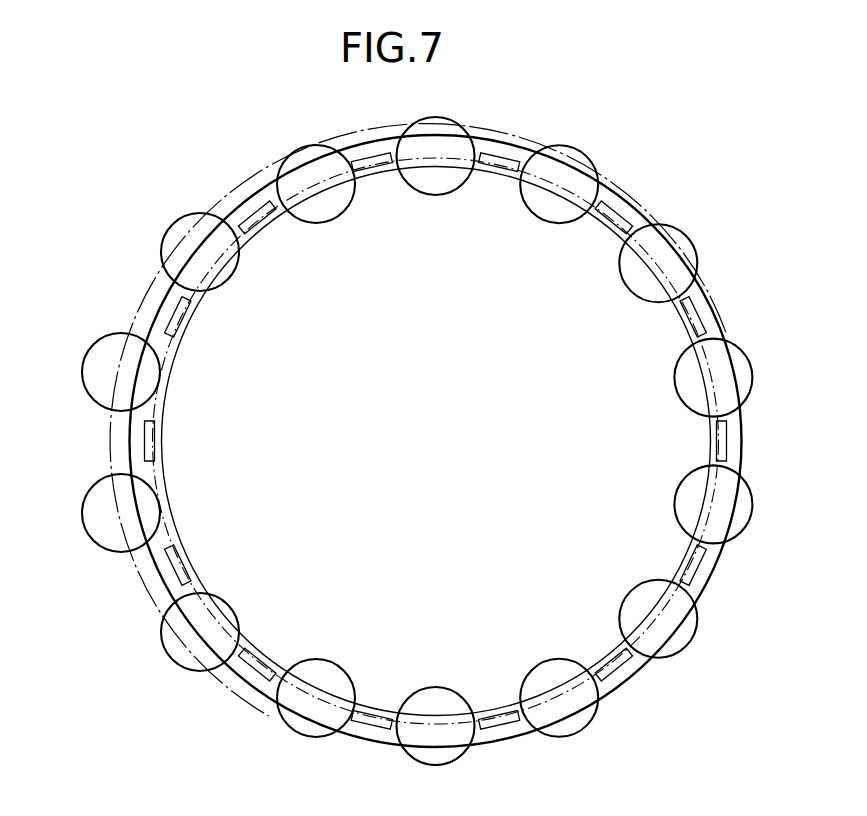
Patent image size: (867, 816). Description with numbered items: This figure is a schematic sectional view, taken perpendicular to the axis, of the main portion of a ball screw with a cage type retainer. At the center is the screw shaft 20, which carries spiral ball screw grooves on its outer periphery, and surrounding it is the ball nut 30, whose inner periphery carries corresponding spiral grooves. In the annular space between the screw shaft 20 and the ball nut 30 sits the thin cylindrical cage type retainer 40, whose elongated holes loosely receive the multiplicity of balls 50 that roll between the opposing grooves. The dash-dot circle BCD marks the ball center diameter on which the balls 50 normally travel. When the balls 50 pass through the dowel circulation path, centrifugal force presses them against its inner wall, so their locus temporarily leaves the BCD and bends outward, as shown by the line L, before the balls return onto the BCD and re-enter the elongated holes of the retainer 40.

The screw shaft 20 is at (708, 337).
The ball nut 30 is at (504, 153).
The cage type retainer 40 is at (627, 208).
The balls 50 is at (690, 243).
The line L is at (150, 307).
The ball center diameter BCD is at (172, 533).